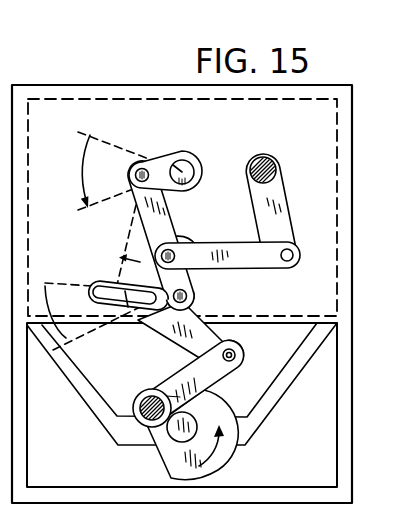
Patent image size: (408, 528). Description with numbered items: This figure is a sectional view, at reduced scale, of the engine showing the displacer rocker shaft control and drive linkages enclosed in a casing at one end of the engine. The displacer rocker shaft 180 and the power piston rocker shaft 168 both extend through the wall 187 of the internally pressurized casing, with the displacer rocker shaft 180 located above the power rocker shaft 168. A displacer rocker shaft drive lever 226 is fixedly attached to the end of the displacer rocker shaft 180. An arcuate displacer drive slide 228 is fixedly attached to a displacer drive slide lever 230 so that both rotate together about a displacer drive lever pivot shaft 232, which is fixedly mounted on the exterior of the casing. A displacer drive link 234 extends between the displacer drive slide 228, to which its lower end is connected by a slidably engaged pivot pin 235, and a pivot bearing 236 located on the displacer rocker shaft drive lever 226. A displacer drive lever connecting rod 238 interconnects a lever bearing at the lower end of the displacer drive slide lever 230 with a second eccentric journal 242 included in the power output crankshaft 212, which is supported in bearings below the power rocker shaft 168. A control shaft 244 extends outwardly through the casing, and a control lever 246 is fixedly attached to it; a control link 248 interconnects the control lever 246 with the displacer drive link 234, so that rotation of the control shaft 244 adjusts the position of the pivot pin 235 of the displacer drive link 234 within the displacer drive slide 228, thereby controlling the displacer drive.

The power piston rocker shaft 168 is at (188, 217).
The displacer rocker shaft 180 is at (196, 160).
The wall of internally pressurized casing 187 is at (65, 217).
The power output crankshaft 212 is at (163, 453).
The displacer rocker shaft drive lever 226 is at (161, 152).
The arcuate displacer drive slide 228 is at (96, 283).
The displacer drive slide lever 230 is at (173, 357).
The displacer drive lever pivot shaft 232 is at (141, 317).
The displacer drive link 234 is at (170, 206).
The pivot pin 235 is at (190, 297).
The pivot bearing 236 is at (134, 161).
The displacer drive lever connecting rod 238 is at (222, 381).
The second eccentric journal 242 is at (133, 400).
The control shaft 244 is at (264, 157).
The control lever 246 is at (292, 208).
The control link 248 is at (271, 278).